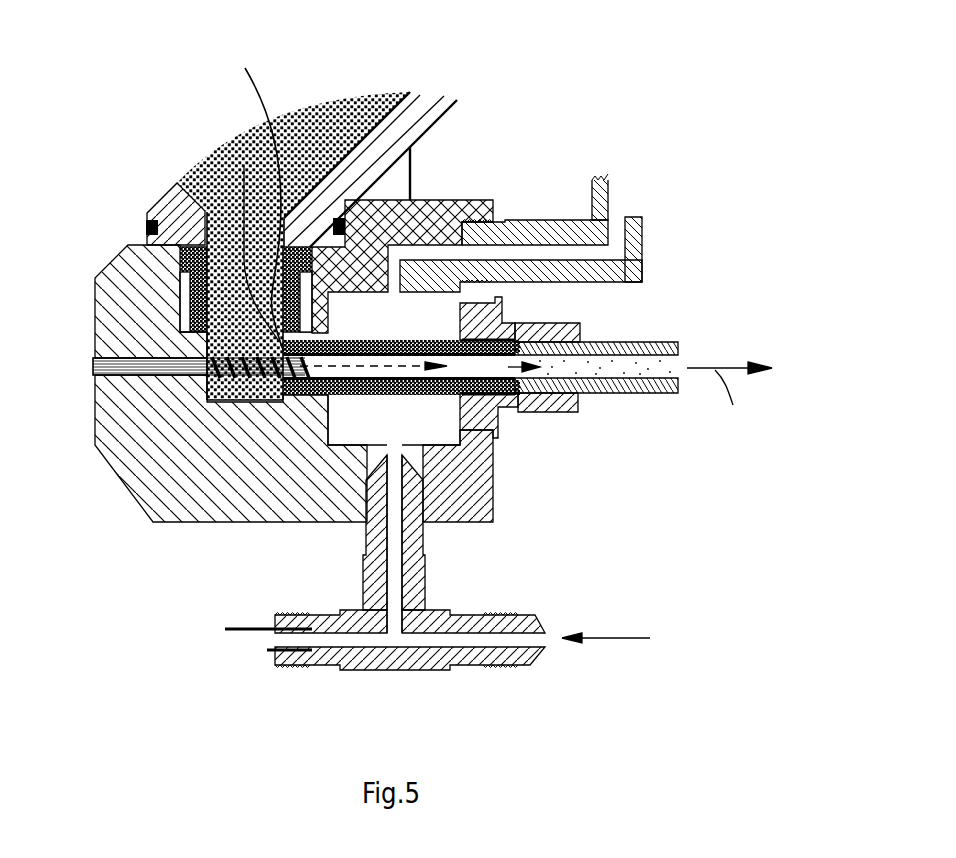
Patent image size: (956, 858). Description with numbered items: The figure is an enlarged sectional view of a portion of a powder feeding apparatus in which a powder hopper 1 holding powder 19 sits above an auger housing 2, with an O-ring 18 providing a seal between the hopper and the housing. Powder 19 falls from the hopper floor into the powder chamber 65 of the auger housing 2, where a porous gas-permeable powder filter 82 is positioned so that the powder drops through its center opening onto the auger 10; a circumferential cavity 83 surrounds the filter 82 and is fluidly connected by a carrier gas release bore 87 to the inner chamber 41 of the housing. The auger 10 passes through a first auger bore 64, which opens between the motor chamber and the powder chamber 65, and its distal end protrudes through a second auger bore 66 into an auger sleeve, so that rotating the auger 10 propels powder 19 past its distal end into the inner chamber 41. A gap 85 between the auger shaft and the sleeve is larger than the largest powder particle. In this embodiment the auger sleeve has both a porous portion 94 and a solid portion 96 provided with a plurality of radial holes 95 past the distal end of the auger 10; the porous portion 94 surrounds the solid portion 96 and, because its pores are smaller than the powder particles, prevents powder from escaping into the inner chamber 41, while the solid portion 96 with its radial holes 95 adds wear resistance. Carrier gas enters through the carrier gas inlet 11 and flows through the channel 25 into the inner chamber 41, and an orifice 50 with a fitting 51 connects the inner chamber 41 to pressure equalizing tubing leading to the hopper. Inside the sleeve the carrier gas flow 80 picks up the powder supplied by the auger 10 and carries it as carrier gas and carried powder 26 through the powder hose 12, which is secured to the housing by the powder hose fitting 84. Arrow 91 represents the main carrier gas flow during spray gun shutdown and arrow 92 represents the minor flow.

The powder hopper 1 is at (424, 97).
The auger housing 2 is at (480, 480).
The auger 10 is at (172, 372).
The carrier gas inlet 11 is at (505, 668).
The powder hose 12 is at (597, 395).
The O-ring 18 is at (150, 223).
The powder 19 is at (335, 118).
The channel 25 is at (392, 533).
The carrier gas and carried powder 26 is at (678, 367).
The inner chamber 41 is at (393, 470).
The orifice 50 is at (490, 198).
The fitting 51 is at (620, 272).
The first auger bore 64 is at (122, 380).
The powder chamber 65 is at (238, 410).
The second auger bore 66 is at (315, 378).
The carrier gas flow 80 is at (540, 398).
The porous gas-permeable powder filter 82 is at (180, 262).
The circumferential cavity 83 is at (183, 307).
The powder hose fitting 84 is at (578, 325).
The gap 85 is at (236, 313).
The carrier gas release bore 87 is at (412, 227).
The main carrier gas flow arrow 91 is at (246, 193).
The minor flow arrow 92 is at (240, 187).
The porous portion 94 is at (405, 380).
The radial holes 95 is at (475, 498).
The solid portion 96 is at (507, 395).